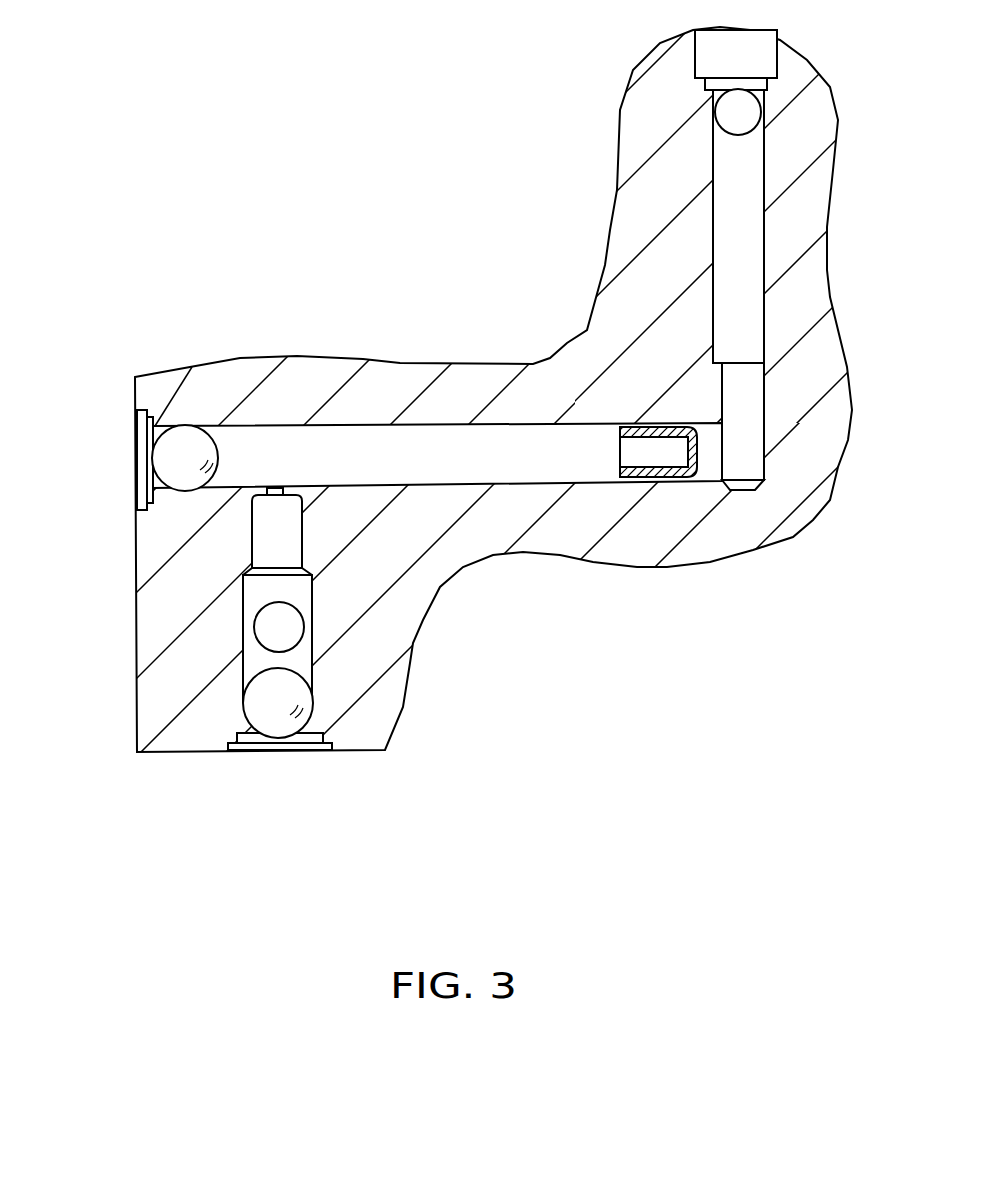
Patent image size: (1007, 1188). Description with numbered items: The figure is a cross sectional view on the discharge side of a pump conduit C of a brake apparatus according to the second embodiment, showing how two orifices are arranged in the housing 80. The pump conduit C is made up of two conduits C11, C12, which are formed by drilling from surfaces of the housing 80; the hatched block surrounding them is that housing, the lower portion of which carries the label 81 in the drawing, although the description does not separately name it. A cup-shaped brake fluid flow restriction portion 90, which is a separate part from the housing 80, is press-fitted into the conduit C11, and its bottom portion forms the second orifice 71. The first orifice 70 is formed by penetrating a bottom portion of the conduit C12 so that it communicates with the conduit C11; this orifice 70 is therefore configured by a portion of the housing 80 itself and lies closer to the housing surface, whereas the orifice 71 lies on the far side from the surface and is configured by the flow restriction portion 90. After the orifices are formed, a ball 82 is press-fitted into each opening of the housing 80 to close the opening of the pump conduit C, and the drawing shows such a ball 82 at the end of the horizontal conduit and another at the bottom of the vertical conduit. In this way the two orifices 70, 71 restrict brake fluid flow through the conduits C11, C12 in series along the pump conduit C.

The housing 80 is at (232, 356).
The housing body 81 is at (137, 652).
The ball 82 is at (165, 467).
The first orifice 70 is at (276, 497).
The second orifice 71 is at (710, 452).
The brake fluid flow restriction portion 90 is at (605, 456).
The pump conduit C is at (728, 233).
The conduit C11 is at (333, 427).
The conduit C12 is at (243, 598).